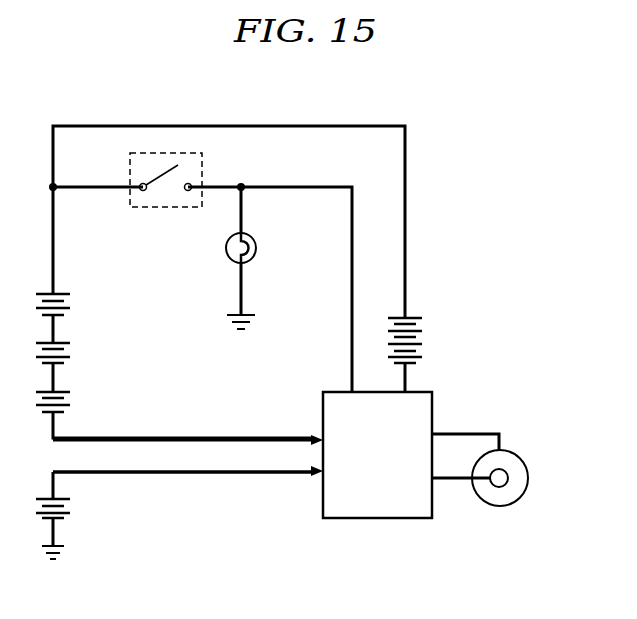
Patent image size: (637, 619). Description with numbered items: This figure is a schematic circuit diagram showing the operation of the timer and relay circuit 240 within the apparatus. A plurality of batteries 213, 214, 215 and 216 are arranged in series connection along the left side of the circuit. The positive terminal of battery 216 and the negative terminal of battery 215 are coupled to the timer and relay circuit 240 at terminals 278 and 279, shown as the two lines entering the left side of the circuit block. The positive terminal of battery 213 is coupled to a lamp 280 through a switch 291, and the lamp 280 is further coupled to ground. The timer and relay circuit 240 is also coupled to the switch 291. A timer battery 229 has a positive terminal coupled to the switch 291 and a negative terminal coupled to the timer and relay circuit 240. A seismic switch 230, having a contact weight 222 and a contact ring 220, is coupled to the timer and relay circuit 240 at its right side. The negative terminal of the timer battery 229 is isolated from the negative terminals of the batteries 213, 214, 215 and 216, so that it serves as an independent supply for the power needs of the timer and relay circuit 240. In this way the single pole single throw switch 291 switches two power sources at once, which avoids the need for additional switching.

The battery 213 is at (62, 292).
The battery 214 is at (62, 341).
The battery 215 is at (62, 391).
The battery 216 is at (65, 515).
The contact ring 220 is at (499, 507).
The contact weight 222 is at (498, 488).
The timer battery 229 is at (415, 317).
The seismic switch 230 is at (524, 495).
The timer and relay circuit 240 is at (435, 405).
The terminal 278 is at (318, 476).
The terminal 279 is at (318, 437).
The lamp 280 is at (256, 248).
The switch 291 is at (203, 167).